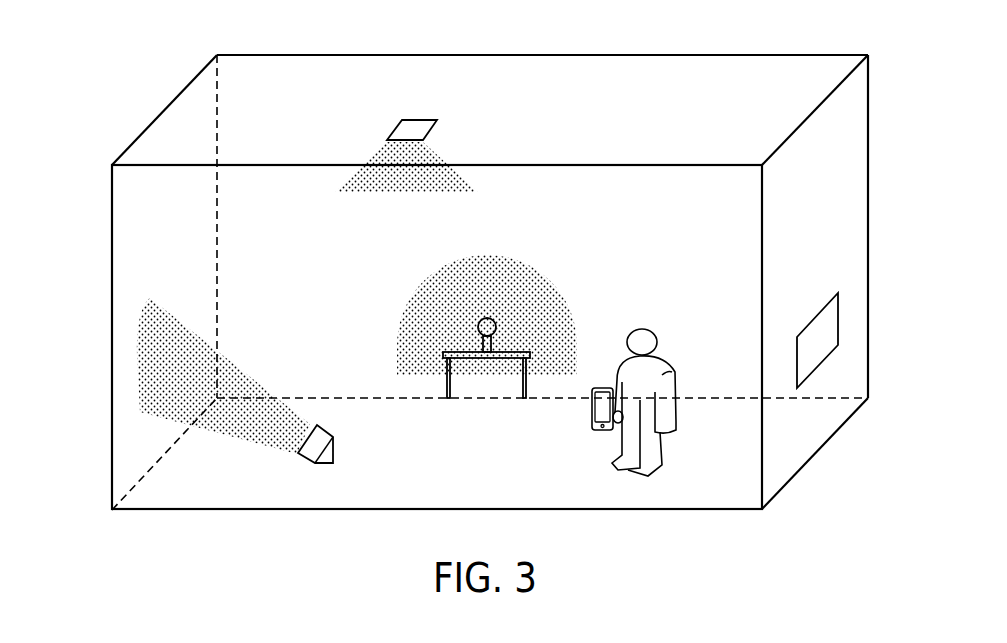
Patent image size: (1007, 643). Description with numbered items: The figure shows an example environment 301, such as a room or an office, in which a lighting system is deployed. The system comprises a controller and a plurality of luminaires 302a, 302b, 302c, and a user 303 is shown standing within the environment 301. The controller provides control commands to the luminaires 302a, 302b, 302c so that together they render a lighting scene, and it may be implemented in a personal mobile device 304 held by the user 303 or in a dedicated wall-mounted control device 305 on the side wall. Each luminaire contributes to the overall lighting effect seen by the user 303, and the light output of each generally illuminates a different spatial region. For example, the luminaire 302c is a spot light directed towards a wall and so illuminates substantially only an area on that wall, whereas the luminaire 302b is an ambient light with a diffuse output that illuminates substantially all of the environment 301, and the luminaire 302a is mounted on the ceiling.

The environment 301 is at (100, 66).
The luminaire 302a is at (437, 125).
The luminaire 302b is at (487, 318).
The luminaire 302c is at (335, 455).
The user 303 is at (672, 445).
The personal mobile device 304 is at (596, 432).
The wall-mounted control device 305 is at (839, 315).